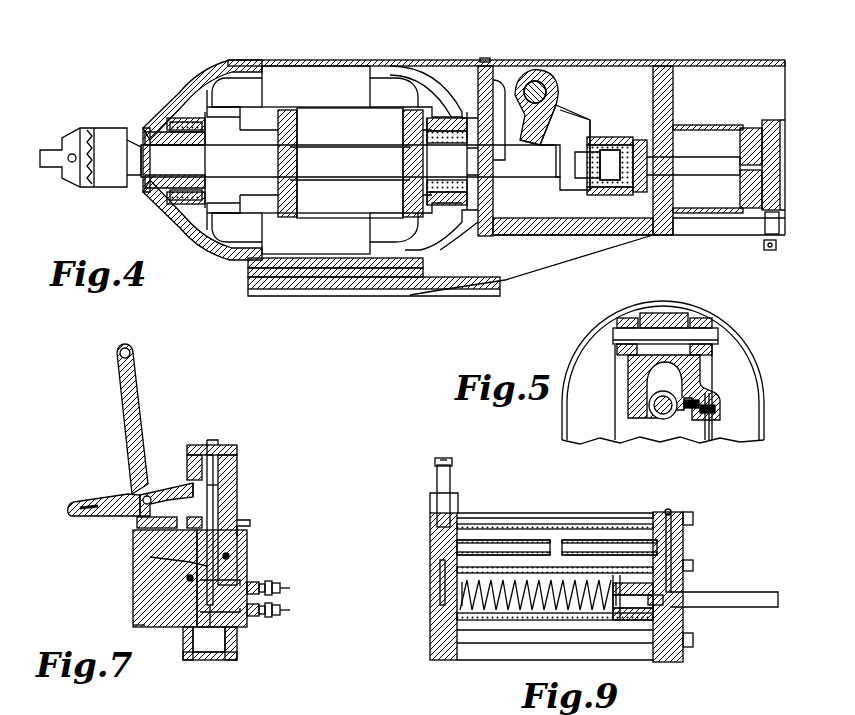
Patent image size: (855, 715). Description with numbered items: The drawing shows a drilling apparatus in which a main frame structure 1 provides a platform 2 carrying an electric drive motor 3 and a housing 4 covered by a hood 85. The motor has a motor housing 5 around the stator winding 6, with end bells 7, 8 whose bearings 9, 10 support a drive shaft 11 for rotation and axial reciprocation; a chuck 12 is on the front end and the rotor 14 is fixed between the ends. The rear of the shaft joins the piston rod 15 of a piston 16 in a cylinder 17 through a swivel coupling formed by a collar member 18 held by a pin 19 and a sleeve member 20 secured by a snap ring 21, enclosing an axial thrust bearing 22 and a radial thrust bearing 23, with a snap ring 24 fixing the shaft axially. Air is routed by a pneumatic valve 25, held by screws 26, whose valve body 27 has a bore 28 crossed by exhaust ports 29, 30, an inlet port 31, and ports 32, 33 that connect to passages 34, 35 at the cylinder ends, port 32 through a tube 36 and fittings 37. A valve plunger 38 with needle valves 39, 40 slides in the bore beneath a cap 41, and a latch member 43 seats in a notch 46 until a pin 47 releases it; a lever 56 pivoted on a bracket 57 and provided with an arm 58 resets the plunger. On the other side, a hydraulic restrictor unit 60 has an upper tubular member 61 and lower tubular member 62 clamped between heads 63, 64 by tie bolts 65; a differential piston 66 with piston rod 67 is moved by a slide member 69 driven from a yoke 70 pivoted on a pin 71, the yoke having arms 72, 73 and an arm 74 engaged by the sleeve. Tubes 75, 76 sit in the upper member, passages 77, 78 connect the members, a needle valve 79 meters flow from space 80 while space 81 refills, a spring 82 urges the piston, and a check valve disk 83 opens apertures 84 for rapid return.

In FIG. 4, the main frame structure 1 is at (410, 296).
In FIG. 4, the platform 2 is at (248, 280).
In FIG. 4, the electric drive motor 3 is at (300, 60).
In FIG. 4, the housing 4 is at (670, 64).
In FIG. 5, the housing 4 is at (612, 371).
In FIG. 4, the motor housing 5 is at (336, 66).
In FIG. 4, the stator winding 6 is at (356, 78).
In FIG. 4, the end bell 7 is at (190, 75).
In FIG. 4, the end bell 8 is at (452, 70).
In FIG. 4, the bearing 9 is at (175, 145).
In FIG. 4, the bearing 10 is at (457, 148).
In FIG. 4, the drive shaft 11 is at (230, 152).
In FIG. 5, the drive shaft 11 is at (656, 418).
In FIG. 4, the chuck 12 is at (108, 128).
In FIG. 4, the rotor 14 is at (282, 194).
In FIG. 4, the piston rod 15 is at (690, 157).
In FIG. 4, the piston 16 is at (742, 133).
In FIG. 4, the cylinder 17 is at (697, 125).
In FIG. 4, the collar member 18 is at (640, 140).
In FIG. 4, the pin 19 is at (662, 232).
In FIG. 4, the sleeve member 20 is at (590, 138).
In FIG. 4, the snap ring 21 is at (615, 137).
In FIG. 4, the axial thrust bearing 22 is at (640, 235).
In FIG. 4, the radial thrust bearing 23 is at (597, 137).
In FIG. 4, the snap ring 24 is at (591, 165).
In FIG. 7, the pneumatic valve 25 is at (133, 595).
In FIG. 7, the screws 26 is at (187, 578).
In FIG. 7, the valve body 27 is at (237, 644).
In FIG. 7, the bore 28 is at (195, 644).
In FIG. 7, the exhaust port 29 is at (242, 582).
In FIG. 7, the exhaust port 30 is at (133, 623).
In FIG. 7, the air pressure inlet port 31 is at (280, 585).
In FIG. 7, the port 32 is at (237, 628).
In FIG. 7, the port 33 is at (150, 557).
In FIG. 4, the passage 34 is at (779, 225).
In FIG. 4, the passage 35 is at (673, 222).
In FIG. 7, the tube 36 is at (284, 614).
In FIG. 4, the fittings 37 is at (770, 250).
In FIG. 7, the fittings 37 is at (282, 608).
In FIG. 7, the valve plunger 38 is at (222, 498).
In FIG. 7, the needle valve 39 is at (209, 660).
In FIG. 7, the needle valve 40 is at (215, 490).
In FIG. 7, the cap 41 is at (195, 445).
In FIG. 7, the latch member 43 is at (186, 498).
In FIG. 7, the notch 46 is at (226, 520).
In FIG. 7, the pin 47 is at (238, 530).
In FIG. 7, the lever 56 is at (105, 500).
In FIG. 7, the bracket 57 is at (132, 495).
In FIG. 7, the arm 58 is at (138, 398).
In FIG. 9, the hydraulic restrictor unit 60 is at (504, 513).
In FIG. 9, the upper tubular member 61 is at (598, 524).
In FIG. 9, the lower tubular member 62 is at (560, 620).
In FIG. 9, the head 63 is at (672, 662).
In FIG. 9, the head 64 is at (444, 652).
In FIG. 9, the tie bolts 65 is at (693, 520).
In FIG. 9, the differential piston 66 is at (628, 620).
In FIG. 9, the piston rod 67 is at (740, 596).
In FIG. 5, the slide member 69 is at (707, 420).
In FIG. 4, the yoke 70 is at (545, 80).
In FIG. 5, the yoke 70 is at (685, 318).
In FIG. 4, the pin 71 is at (520, 70).
In FIG. 5, the pin 71 is at (718, 335).
In FIG. 4, the arm 72 is at (540, 145).
In FIG. 5, the arm 72 is at (689, 412).
In FIG. 5, the arm 73 is at (718, 418).
In FIG. 5, the arm 74 is at (630, 402).
In FIG. 9, the tube 75 is at (575, 540).
In FIG. 9, the tube 76 is at (535, 540).
In FIG. 9, the passage 77 is at (683, 548).
In FIG. 9, the passage 78 is at (440, 596).
In FIG. 4, the needle valve 79 is at (484, 58).
In FIG. 9, the needle valve 79 is at (450, 486).
In FIG. 9, the space 80 is at (497, 618).
In FIG. 9, the space 81 is at (650, 620).
In FIG. 9, the spring 82 is at (457, 617).
In FIG. 9, the check valve disk 83 is at (612, 620).
In FIG. 9, the apertures 84 is at (672, 605).
In FIG. 4, the hood 85 is at (748, 60).
In FIG. 5, the hood 85 is at (766, 392).